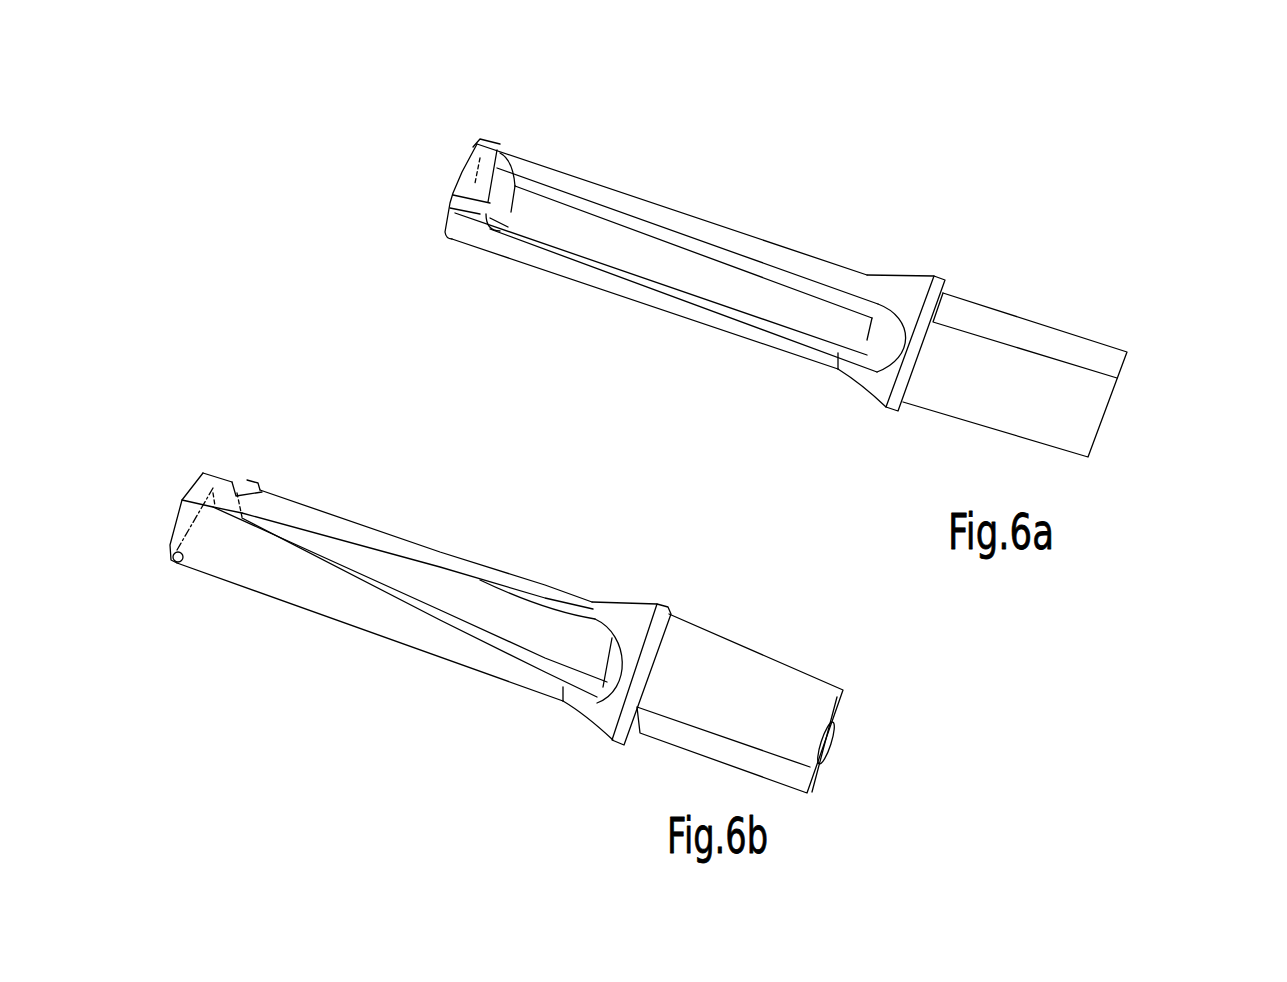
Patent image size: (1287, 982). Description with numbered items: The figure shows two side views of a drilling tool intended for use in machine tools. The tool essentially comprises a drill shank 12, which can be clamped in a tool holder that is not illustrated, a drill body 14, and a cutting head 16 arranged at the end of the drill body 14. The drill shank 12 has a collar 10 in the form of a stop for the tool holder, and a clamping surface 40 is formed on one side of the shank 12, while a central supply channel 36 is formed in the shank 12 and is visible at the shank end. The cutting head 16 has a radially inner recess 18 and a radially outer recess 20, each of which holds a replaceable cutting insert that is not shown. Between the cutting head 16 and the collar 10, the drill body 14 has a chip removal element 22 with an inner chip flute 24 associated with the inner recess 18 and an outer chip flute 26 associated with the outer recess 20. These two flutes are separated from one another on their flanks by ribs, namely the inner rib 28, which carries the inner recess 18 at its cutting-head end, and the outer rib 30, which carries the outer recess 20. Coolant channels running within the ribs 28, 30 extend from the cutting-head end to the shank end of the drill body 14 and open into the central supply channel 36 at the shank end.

In FIG. 6B, the collar 10 is at (672, 600).
In FIG. 6A, the drill shank 12 is at (1018, 405).
In FIG. 6B, the drill shank 12 is at (805, 688).
In FIG. 6A, the drill body 14 is at (800, 246).
In FIG. 6B, the drill body 14 is at (527, 572).
In FIG. 6A, the cutting head 16 is at (495, 140).
In FIG. 6B, the cutting head 16 is at (247, 473).
In FIG. 6B, the inner recess 18 is at (247, 487).
In FIG. 6A, the outer recess 20 is at (447, 218).
In FIG. 6A, the chip removal element 22 is at (647, 172).
In FIG. 6B, the chip removal element 22 is at (395, 500).
In FIG. 6B, the inner chip flute 24 is at (455, 592).
In FIG. 6A, the outer chip flute 26 is at (727, 277).
In FIG. 6B, the outer chip flute 26 is at (317, 600).
In FIG. 6A, the inner rib 28 is at (850, 265).
In FIG. 6A, the outer rib 30 is at (692, 325).
In FIG. 6B, the outer rib 30 is at (579, 592).
In FIG. 6B, the central supply channel 36 is at (832, 733).
In FIG. 6A, the clamping surface 40 is at (1033, 335).
In FIG. 6B, the clamping surface 40 is at (680, 730).